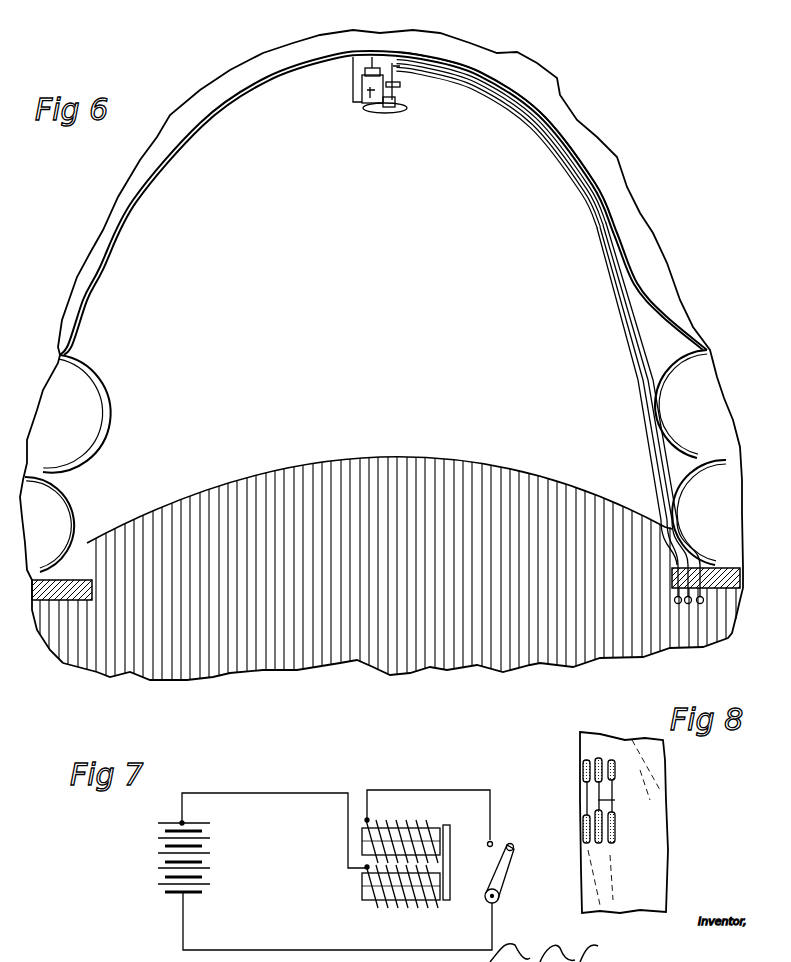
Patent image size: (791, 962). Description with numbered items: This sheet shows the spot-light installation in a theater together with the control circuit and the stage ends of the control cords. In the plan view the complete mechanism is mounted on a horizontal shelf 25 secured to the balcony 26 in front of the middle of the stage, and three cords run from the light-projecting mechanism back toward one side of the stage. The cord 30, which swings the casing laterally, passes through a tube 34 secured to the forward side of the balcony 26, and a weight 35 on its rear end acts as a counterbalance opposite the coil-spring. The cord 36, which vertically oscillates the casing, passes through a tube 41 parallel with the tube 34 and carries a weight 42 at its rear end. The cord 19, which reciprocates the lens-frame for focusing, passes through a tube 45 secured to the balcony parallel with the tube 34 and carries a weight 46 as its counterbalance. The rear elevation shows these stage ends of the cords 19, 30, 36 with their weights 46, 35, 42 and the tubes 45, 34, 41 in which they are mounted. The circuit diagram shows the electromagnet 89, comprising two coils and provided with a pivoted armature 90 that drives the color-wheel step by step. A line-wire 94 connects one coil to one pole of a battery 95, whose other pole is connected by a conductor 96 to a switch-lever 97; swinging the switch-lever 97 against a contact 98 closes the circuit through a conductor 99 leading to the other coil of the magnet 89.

In FIG. 6, the horizontal shelf 25 is at (353, 72).
In FIG. 6, the balcony 26 is at (289, 60).
In FIG. 6, the tube 34 is at (486, 90).
In FIG. 8, the tube 34 is at (603, 757).
In FIG. 6, the tube 41 is at (528, 107).
In FIG. 8, the tube 41 is at (615, 762).
In FIG. 6, the tube 45 is at (548, 324).
In FIG. 8, the tube 45 is at (584, 768).
In FIG. 6, the weight 46 is at (678, 603).
In FIG. 8, the weight 46 is at (584, 828).
In FIG. 6, the weight 35 is at (688, 603).
In FIG. 8, the weight 35 is at (599, 844).
In FIG. 6, the weight 42 is at (700, 603).
In FIG. 8, the weight 42 is at (616, 825).
In FIG. 8, the cord 19 is at (587, 798).
In FIG. 8, the cord 36 is at (612, 792).
In FIG. 8, the cord 30 is at (615, 800).
In FIG. 7, the electromagnet 89 is at (401, 850).
In FIG. 7, the armature 90 is at (460, 852).
In FIG. 7, the line-wire 94 is at (274, 831).
In FIG. 7, the battery 95 is at (202, 857).
In FIG. 7, the conductor 96 is at (186, 917).
In FIG. 7, the switch-lever 97 is at (512, 874).
In FIG. 7, the contact 98 is at (494, 841).
In FIG. 7, the conductor 99 is at (437, 790).